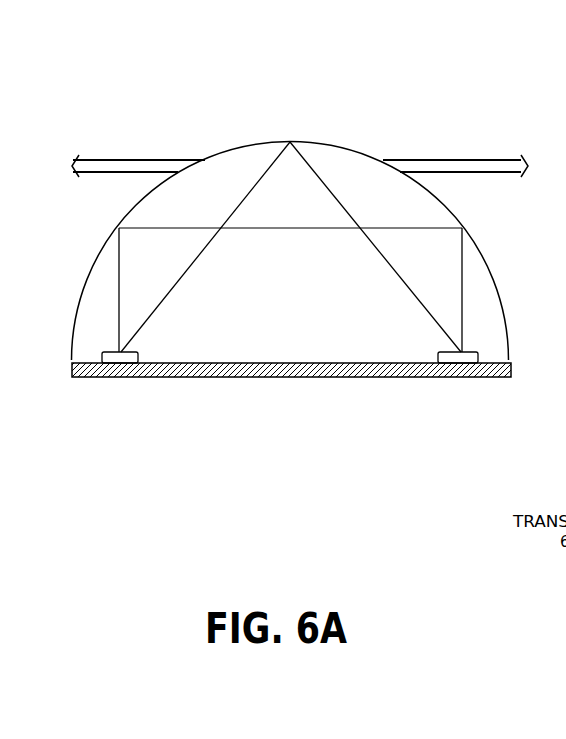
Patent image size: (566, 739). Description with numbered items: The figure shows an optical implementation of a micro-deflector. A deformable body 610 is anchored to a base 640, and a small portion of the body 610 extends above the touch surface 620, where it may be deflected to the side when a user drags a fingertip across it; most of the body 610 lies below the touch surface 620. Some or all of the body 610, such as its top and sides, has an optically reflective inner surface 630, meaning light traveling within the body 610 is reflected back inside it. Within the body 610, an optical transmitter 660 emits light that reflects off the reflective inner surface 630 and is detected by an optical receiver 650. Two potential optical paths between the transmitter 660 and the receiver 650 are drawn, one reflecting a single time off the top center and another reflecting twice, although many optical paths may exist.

The body 610 is at (477, 238).
The touch surface 620 is at (137, 160).
The reflective inner surface 630 is at (326, 145).
The base 640 is at (289, 379).
The optical receiver 650 is at (457, 379).
The optical transmitter 660 is at (123, 379).